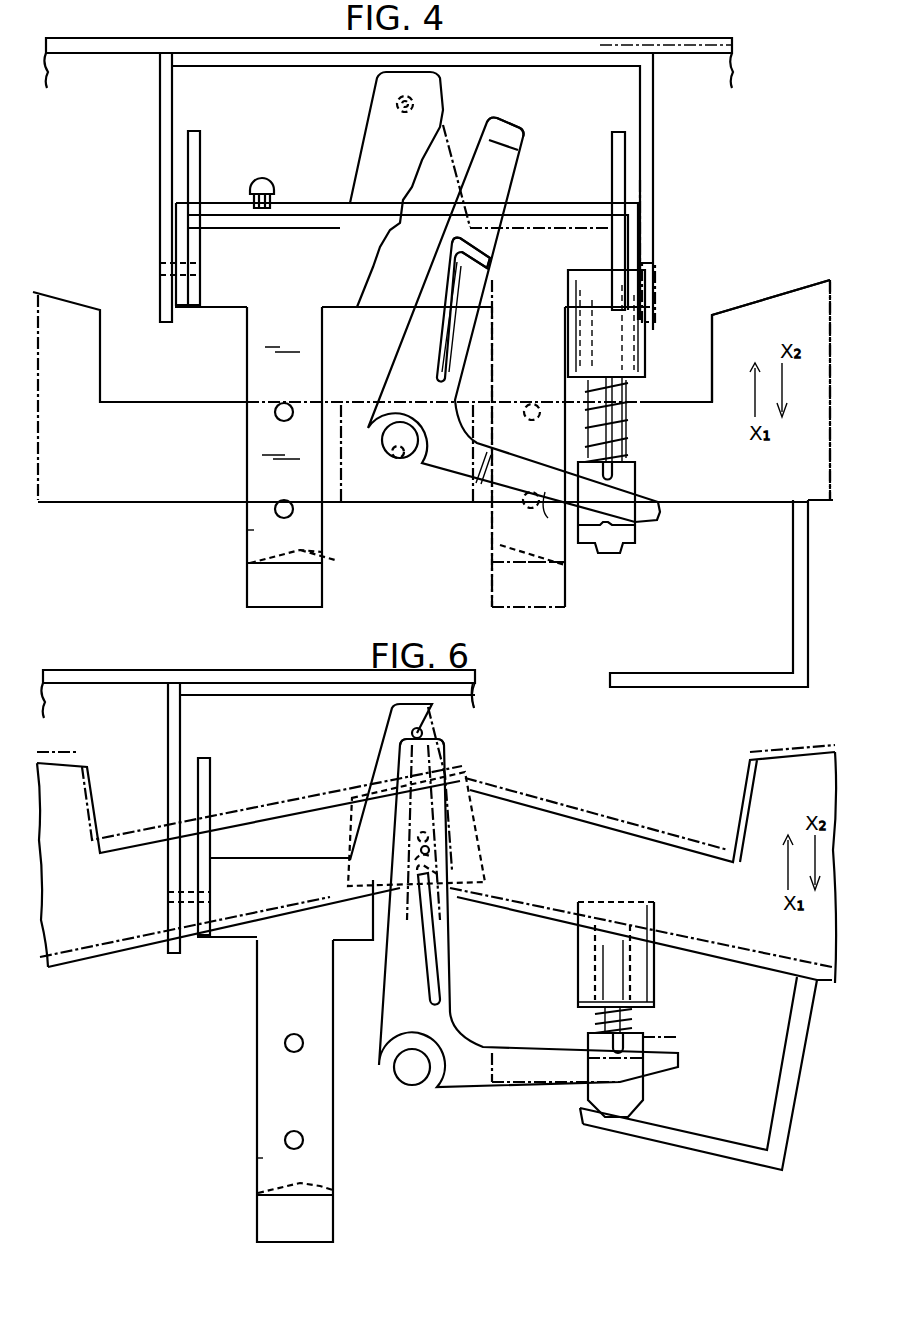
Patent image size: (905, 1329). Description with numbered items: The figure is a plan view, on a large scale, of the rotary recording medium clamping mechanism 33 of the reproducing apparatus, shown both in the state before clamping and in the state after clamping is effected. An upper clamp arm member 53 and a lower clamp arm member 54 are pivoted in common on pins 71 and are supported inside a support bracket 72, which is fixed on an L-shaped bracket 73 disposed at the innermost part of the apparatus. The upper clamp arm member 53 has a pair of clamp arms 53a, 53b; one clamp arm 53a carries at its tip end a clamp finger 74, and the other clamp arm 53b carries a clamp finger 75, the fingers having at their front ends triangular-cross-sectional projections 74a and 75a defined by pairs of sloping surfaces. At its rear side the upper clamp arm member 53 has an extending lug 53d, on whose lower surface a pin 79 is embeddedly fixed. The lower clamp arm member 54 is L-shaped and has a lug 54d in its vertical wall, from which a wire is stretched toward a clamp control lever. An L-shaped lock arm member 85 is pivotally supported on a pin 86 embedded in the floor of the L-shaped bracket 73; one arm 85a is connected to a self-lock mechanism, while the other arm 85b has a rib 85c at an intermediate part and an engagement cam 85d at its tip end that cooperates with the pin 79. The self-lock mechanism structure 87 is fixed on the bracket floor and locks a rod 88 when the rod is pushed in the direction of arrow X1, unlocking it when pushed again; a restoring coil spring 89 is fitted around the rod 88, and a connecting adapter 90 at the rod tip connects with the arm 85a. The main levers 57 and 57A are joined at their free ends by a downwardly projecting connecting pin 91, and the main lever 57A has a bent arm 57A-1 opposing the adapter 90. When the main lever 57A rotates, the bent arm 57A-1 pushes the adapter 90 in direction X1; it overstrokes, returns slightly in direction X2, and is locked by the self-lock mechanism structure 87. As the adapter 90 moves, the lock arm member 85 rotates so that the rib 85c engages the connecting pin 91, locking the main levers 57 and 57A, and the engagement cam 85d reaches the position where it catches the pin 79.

In FIG. 4, the drive unit / assembly 33 is at (673, 29).
In FIG. 6, the drive unit / assembly 33 is at (543, 731).
In FIG. 4, the upper clamp arm member 53 is at (238, 356).
In FIG. 6, the upper clamp arm member 53 is at (251, 985).
In FIG. 4, the clamp arm 53a is at (255, 531).
In FIG. 6, the clamp arm 53a is at (257, 1160).
In FIG. 4, the clamp arm 53b is at (492, 521).
In FIG. 4, the extending lug 53d is at (368, 143).
In FIG. 6, the extending lug 53d is at (385, 762).
In FIG. 4, the lower clamp arm member 54 is at (309, 195).
In FIG. 4, the lug 54d is at (256, 186).
In FIG. 4, the main lever 57 is at (68, 505).
In FIG. 6, the main lever 57 is at (103, 963).
In FIG. 4, the main lever 57A is at (745, 500).
In FIG. 6, the main lever 57A is at (740, 960).
In FIG. 4, the bent arm 57A-1 is at (709, 687).
In FIG. 6, the bent arm 57A-1 is at (680, 1148).
In FIG. 4, the pin 71 is at (160, 266).
In FIG. 6, the pin 71 is at (168, 896).
In FIG. 4, the support bracket 72 is at (160, 136).
In FIG. 6, the support bracket 72 is at (168, 779).
In FIG. 4, the L-shaped bracket 73 is at (128, 38).
In FIG. 6, the L-shaped bracket 73 is at (129, 683).
In FIG. 4, the clamp finger 74 is at (248, 589).
In FIG. 6, the clamp finger 74 is at (257, 1220).
In FIG. 4, the triangular-cross-sectional projection 74a is at (325, 558).
In FIG. 6, the triangular-cross-sectional projection 74a is at (333, 1193).
In FIG. 4, the clamp finger 75 is at (492, 587).
In FIG. 4, the triangular-cross-sectional projection 75a is at (565, 569).
In FIG. 4, the pin 79 is at (396, 102).
In FIG. 6, the pin 79 is at (412, 733).
In FIG. 4, the lock arm member 85 is at (384, 370).
In FIG. 6, the lock arm member 85 is at (445, 1092).
In FIG. 4, the arm 85a is at (517, 474).
In FIG. 6, the arm 85a is at (538, 1085).
In FIG. 4, the arm 85b is at (430, 300).
In FIG. 6, the arm 85b is at (400, 960).
In FIG. 4, the rib 85c is at (490, 253).
In FIG. 6, the rib 85c is at (432, 848).
In FIG. 4, the engagement cam 85d is at (508, 132).
In FIG. 6, the engagement cam 85d is at (438, 745).
In FIG. 4, the pin 86 is at (412, 460).
In FIG. 6, the pin 86 is at (408, 1080).
In FIG. 4, the self-lock mechanism structure 87 is at (648, 352).
In FIG. 6, the self-lock mechanism structure 87 is at (655, 976).
In FIG. 4, the rod 88 is at (630, 440).
In FIG. 6, the rod 88 is at (635, 1022).
In FIG. 4, the coil spring 89 is at (632, 424).
In FIG. 6, the coil spring 89 is at (594, 1021).
In FIG. 4, the connecting adapter 90 is at (638, 480).
In FIG. 6, the connecting adapter 90 is at (645, 1093).
In FIG. 4, the connecting pin 91 is at (396, 458).
In FIG. 6, the connecting pin 91 is at (420, 852).